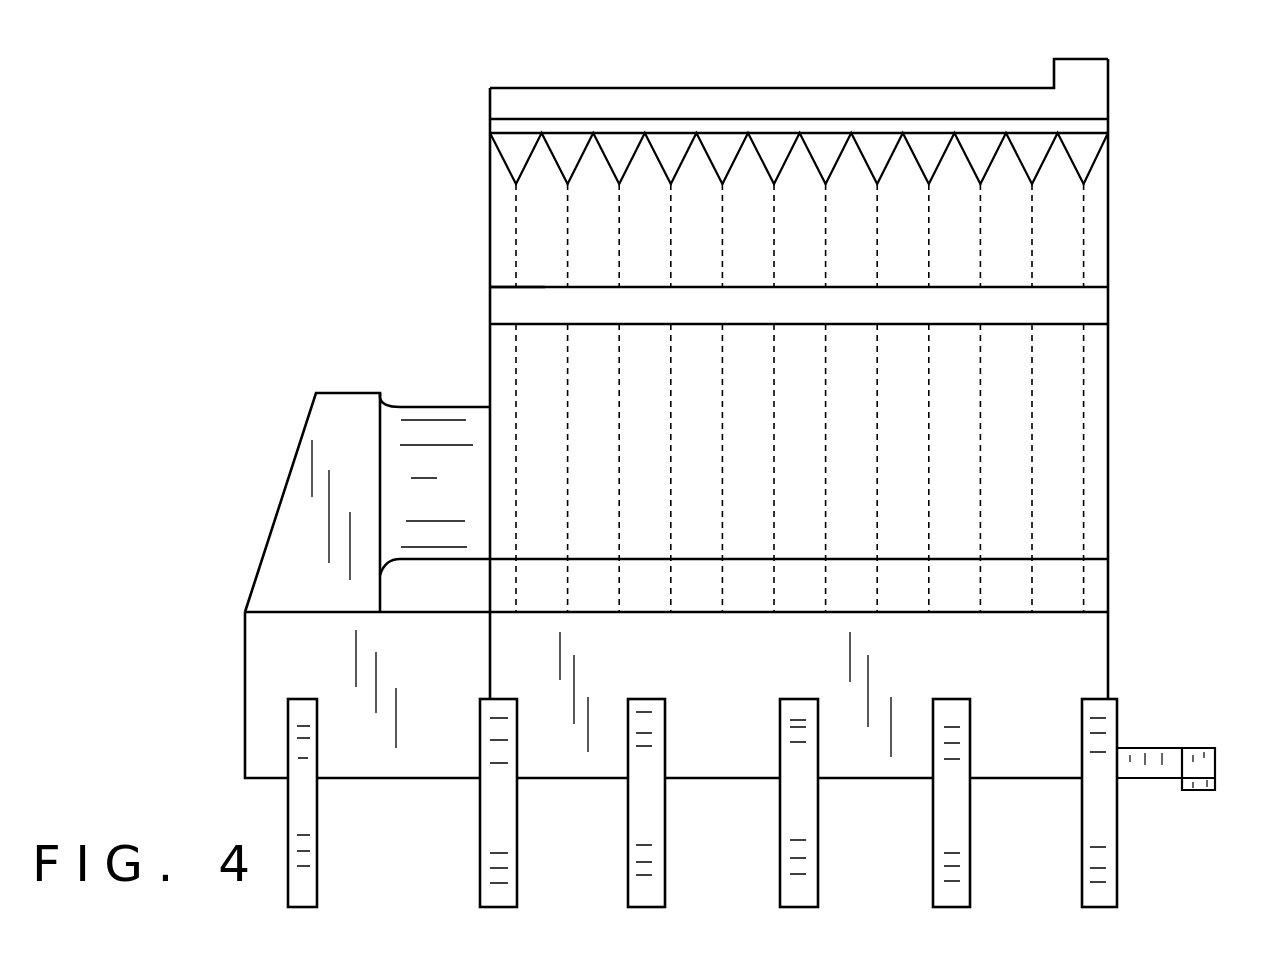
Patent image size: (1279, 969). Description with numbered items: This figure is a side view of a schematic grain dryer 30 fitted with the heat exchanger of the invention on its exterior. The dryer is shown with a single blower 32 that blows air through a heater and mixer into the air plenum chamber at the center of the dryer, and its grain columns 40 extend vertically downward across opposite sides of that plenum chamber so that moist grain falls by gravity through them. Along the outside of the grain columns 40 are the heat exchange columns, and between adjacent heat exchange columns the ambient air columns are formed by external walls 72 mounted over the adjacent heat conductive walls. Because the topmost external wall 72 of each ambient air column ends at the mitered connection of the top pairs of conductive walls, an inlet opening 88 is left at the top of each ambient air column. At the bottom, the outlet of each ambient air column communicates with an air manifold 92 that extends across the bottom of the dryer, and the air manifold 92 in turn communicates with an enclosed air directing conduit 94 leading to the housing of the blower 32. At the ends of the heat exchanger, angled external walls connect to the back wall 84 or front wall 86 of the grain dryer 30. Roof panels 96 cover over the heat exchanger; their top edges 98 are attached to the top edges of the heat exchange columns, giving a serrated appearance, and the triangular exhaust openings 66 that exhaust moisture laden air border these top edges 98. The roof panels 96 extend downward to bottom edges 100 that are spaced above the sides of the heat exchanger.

The grain dryer 30 is at (1128, 153).
The blower 32 is at (430, 422).
The grain columns 40 is at (1008, 431).
The triangular exhaust opening 66 is at (570, 153).
The external walls 72 is at (532, 366).
The back wall 84 is at (1110, 258).
The front wall 86 is at (490, 222).
The inlet opening 88 is at (1092, 302).
The air manifold 92 is at (1078, 650).
The air directing conduit 94 is at (284, 558).
The roof panels 96 is at (1065, 218).
The top edges 98 is at (652, 150).
The bottom edges 100 is at (545, 287).